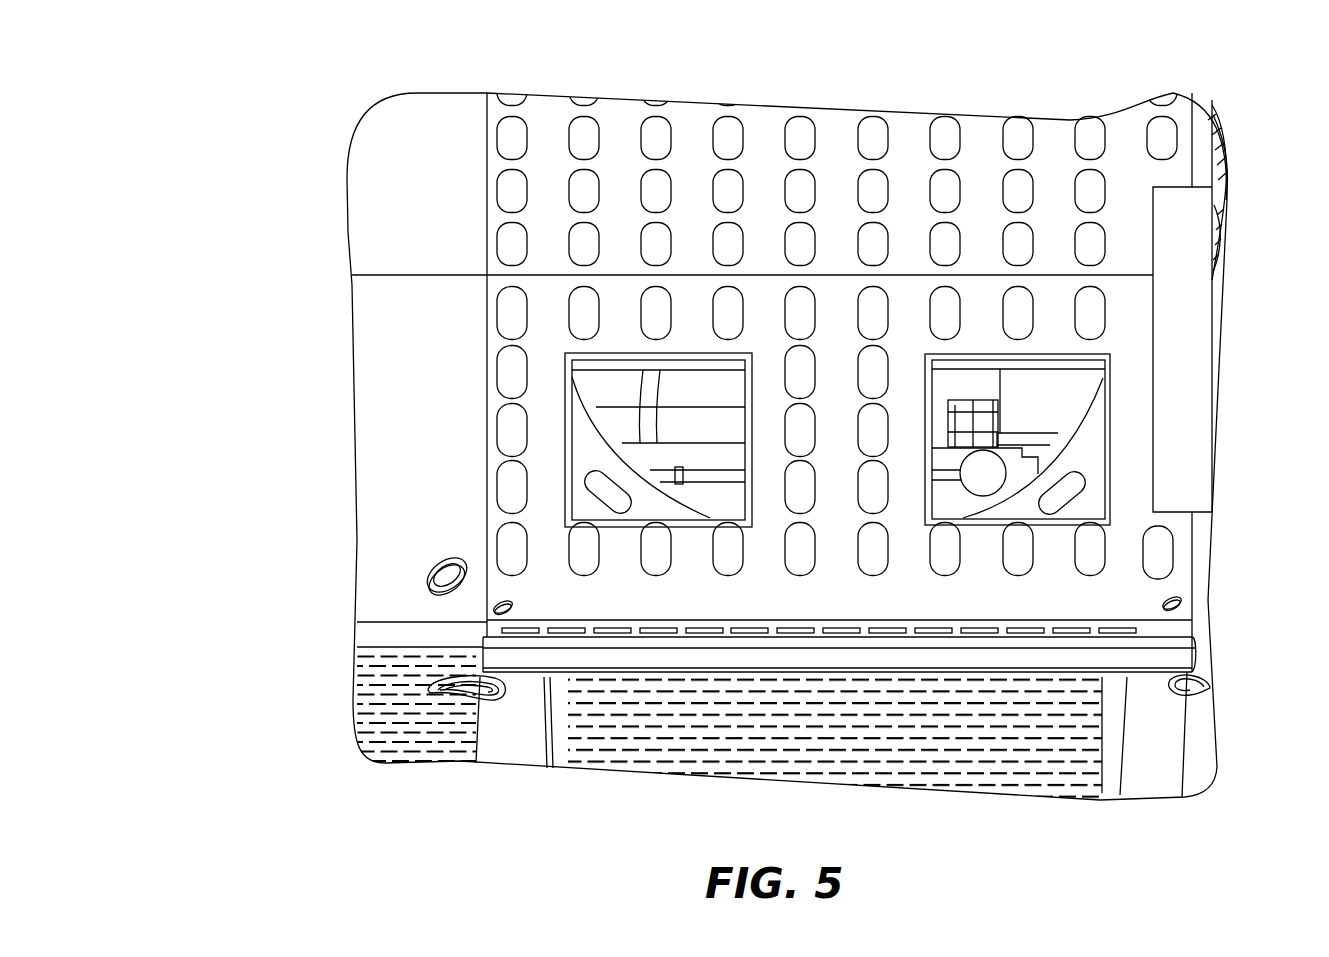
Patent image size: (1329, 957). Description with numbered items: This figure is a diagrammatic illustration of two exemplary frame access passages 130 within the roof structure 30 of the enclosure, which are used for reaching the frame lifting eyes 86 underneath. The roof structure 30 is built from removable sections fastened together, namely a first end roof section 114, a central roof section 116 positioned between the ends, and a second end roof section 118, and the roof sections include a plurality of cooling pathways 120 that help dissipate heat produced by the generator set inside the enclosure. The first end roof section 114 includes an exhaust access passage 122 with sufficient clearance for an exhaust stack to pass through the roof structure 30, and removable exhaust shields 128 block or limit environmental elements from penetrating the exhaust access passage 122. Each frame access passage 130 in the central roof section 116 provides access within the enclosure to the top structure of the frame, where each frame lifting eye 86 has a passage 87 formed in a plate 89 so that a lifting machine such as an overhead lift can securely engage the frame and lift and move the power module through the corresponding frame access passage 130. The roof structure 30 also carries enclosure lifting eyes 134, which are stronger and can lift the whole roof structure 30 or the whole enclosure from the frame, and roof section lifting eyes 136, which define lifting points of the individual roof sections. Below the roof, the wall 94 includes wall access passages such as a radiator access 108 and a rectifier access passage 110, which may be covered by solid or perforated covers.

The roof structure 30 is at (1199, 120).
The frame lifting eye 86 is at (598, 452).
The passage 87 is at (590, 494).
The plate 89 is at (585, 428).
The wall 94 is at (500, 758).
The radiator access 108 is at (1110, 785).
The rectifier access passage 110 is at (478, 738).
The first end roof section 114 is at (1203, 177).
The central roof section 116 is at (763, 135).
The second end roof section 118 is at (410, 196).
The cooling pathway 120 is at (955, 182).
The exhaust access passage 122 is at (1137, 356).
The removable exhaust shield 128 is at (1198, 213).
The frame access passage 130 is at (603, 402).
The enclosure lifting eye 134 is at (433, 568).
The roof section lifting eye 136 is at (507, 605).